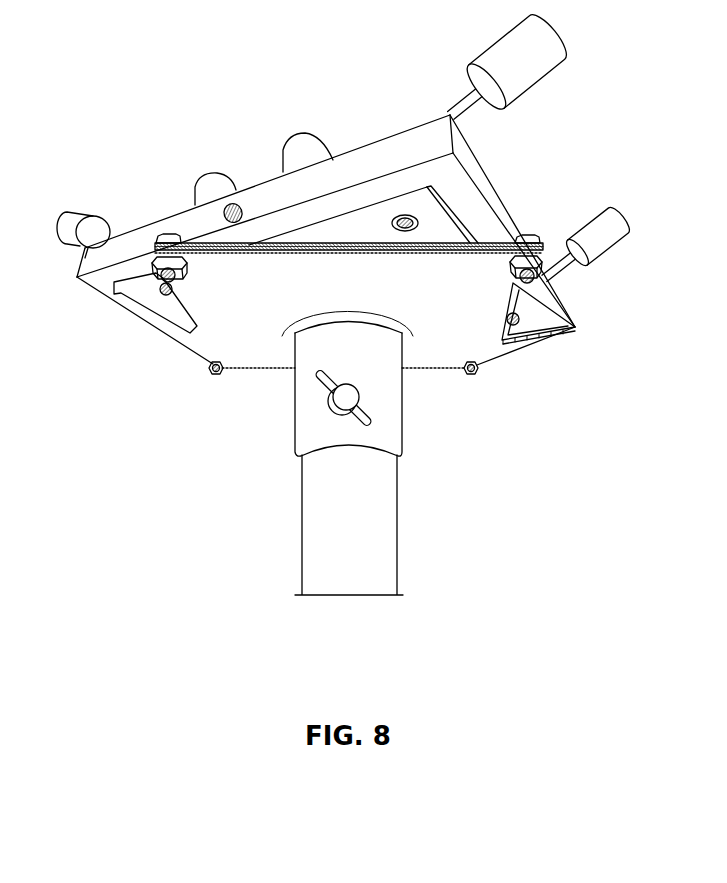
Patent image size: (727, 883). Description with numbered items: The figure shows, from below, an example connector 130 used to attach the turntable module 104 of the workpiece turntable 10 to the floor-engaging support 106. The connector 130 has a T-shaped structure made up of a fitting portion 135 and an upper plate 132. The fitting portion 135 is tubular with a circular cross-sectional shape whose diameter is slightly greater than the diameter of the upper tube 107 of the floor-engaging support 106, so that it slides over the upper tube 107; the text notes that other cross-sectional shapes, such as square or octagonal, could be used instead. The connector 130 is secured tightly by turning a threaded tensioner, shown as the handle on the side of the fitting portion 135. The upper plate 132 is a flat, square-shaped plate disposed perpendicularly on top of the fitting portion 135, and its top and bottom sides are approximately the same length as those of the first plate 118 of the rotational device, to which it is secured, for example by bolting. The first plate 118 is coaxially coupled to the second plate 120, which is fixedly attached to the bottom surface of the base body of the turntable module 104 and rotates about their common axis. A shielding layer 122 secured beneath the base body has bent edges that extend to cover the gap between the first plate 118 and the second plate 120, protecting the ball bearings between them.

The sign mounting assembly 10 is at (103, 258).
The turntable module 104 is at (518, 168).
The first plate 118 is at (442, 221).
The second plate 120 is at (498, 243).
The shielding layer 122 is at (150, 285).
The upper plate 132 is at (197, 300).
The connector 130 is at (203, 404).
The fitting portion 135 is at (405, 432).
The floor-engaging support 106 is at (265, 550).
The upper tube 107 is at (398, 530).